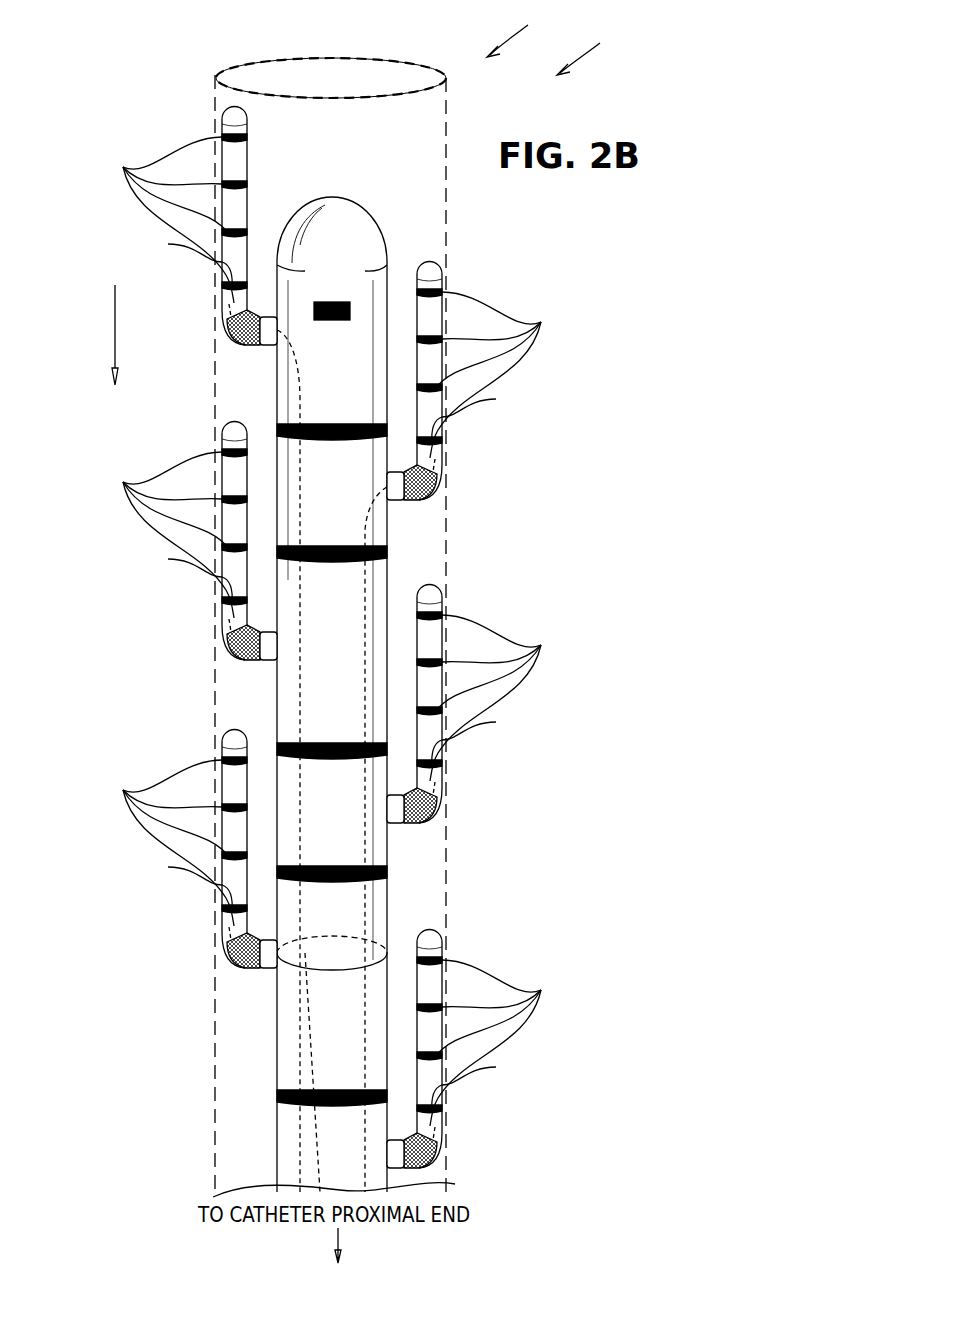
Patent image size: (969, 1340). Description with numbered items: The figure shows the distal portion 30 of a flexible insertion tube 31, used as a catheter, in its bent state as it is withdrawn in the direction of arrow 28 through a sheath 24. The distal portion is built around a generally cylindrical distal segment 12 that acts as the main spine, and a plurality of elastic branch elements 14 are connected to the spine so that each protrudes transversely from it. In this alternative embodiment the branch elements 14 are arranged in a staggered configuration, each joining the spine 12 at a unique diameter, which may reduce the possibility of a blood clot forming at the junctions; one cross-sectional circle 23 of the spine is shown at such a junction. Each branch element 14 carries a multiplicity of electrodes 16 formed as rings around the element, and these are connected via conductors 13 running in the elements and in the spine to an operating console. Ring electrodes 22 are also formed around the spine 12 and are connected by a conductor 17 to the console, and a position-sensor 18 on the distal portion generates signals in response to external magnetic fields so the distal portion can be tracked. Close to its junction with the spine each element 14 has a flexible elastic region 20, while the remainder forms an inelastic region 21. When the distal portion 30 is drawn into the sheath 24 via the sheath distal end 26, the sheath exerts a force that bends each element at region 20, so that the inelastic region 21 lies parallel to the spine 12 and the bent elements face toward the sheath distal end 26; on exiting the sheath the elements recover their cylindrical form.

The distal segment 12 is at (345, 198).
The conductors 13 is at (300, 676).
The elastic branch elements 14 is at (247, 153).
The electrodes 16 is at (331, 631).
The conductors 17 is at (320, 1162).
The position-sensors 18 is at (335, 322).
The region 20 is at (331, 739).
The inelastic region 21 is at (331, 673).
The ring electrodes 22 is at (333, 440).
The cross-sectional circle 23 is at (300, 942).
The sheath 24 is at (215, 1054).
The sheath distal end 26 is at (240, 75).
The arrow 28 is at (115, 328).
The distal portion 30 is at (523, 36).
The flexible insertion tube 31 is at (593, 53).